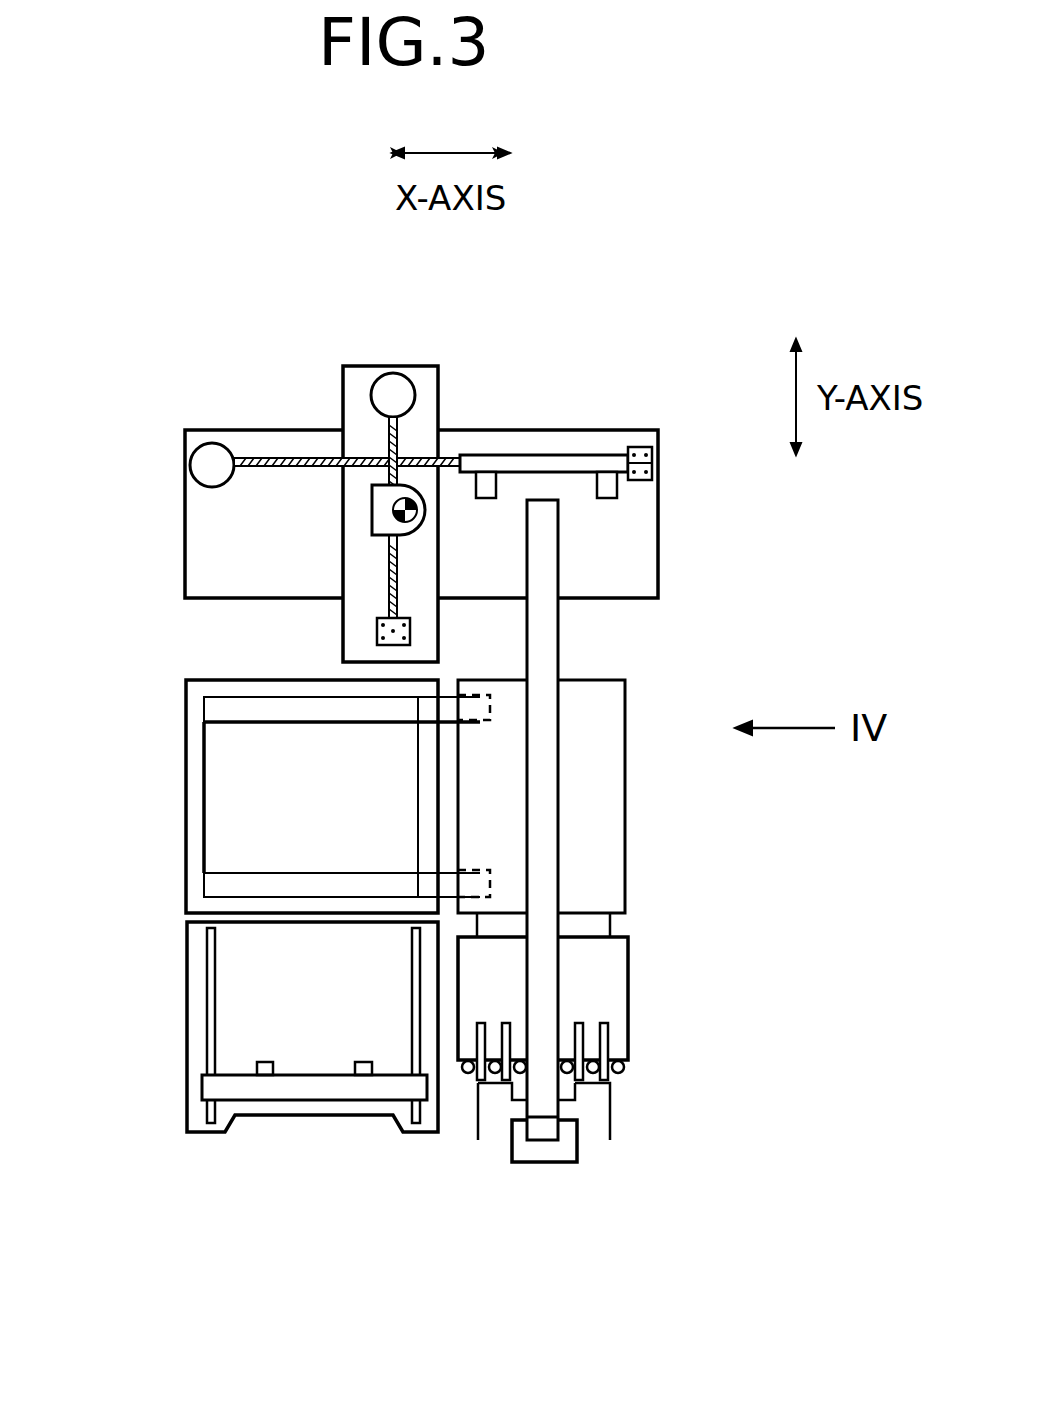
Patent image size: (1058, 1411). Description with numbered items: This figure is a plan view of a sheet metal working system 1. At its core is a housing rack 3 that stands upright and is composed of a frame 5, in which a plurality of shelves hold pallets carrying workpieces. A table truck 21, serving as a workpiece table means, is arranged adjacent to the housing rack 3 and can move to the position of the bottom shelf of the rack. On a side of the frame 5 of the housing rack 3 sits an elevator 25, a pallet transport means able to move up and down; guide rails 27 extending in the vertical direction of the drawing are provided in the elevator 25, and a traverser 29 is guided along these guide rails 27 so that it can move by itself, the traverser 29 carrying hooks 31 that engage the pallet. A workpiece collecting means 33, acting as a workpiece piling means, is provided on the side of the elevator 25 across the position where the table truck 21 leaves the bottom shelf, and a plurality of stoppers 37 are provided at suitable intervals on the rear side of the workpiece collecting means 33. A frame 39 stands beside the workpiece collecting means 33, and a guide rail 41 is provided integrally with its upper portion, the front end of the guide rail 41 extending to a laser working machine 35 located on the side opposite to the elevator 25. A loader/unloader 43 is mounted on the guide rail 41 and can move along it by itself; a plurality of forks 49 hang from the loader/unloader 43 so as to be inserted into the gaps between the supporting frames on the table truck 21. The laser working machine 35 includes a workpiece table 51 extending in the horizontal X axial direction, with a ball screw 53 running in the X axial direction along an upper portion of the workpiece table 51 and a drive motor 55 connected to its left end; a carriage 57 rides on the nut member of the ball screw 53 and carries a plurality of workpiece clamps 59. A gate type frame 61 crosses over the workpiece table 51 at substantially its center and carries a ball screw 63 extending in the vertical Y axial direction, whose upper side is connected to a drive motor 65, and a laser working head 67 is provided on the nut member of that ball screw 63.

The sheet metal working system 1 is at (593, 336).
The housing rack 3 is at (121, 731).
The frame 5 is at (186, 815).
The table truck 21 is at (627, 785).
The elevator 25 is at (187, 1025).
The guide rails 27 is at (215, 968).
The traverser 29 is at (308, 1092).
The hooks 31 is at (355, 1062).
The workpiece collecting means 33 is at (630, 970).
The laser working machine 35 is at (597, 416).
The stoppers 37 is at (622, 1068).
The frame 39 is at (543, 1132).
The guide rail 41 is at (543, 633).
The loader/unloader 43 is at (570, 1092).
The forks 49 is at (612, 1075).
The workpiece table 51 is at (641, 511).
The ball screw 53 is at (265, 458).
The drive motor 55 is at (190, 465).
The carriage 57 is at (505, 455).
The workpiece clamps 59 is at (486, 498).
The gate type frame 61 is at (352, 505).
The ball screw 63 is at (388, 604).
The drive motor 65 is at (392, 372).
The laser working head 67 is at (395, 518).